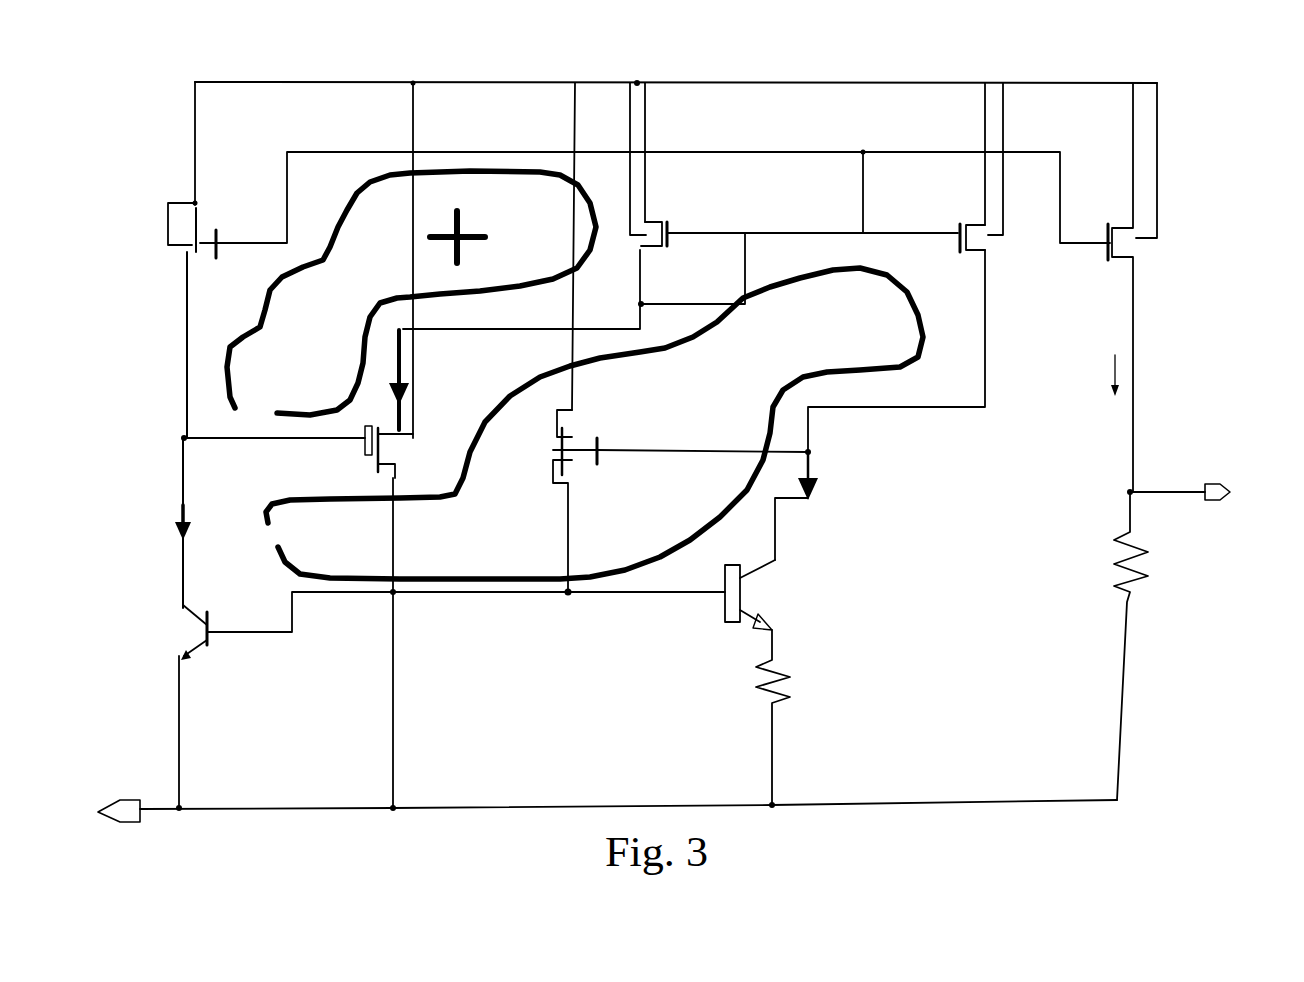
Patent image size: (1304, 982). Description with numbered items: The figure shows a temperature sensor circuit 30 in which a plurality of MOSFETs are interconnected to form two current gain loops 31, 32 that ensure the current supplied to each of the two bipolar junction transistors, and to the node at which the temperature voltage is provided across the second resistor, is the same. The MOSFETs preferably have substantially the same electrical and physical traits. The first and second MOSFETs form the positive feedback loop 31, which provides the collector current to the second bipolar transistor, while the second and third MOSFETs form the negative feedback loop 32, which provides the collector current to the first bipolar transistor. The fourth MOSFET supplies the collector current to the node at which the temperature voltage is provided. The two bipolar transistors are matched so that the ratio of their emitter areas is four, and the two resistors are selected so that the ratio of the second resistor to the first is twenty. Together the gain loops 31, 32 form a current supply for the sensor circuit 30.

The temperature sensing circuit 30 is at (208, 70).
The positive feedback loop 31 is at (498, 168).
The negative feedback loop 32 is at (924, 312).